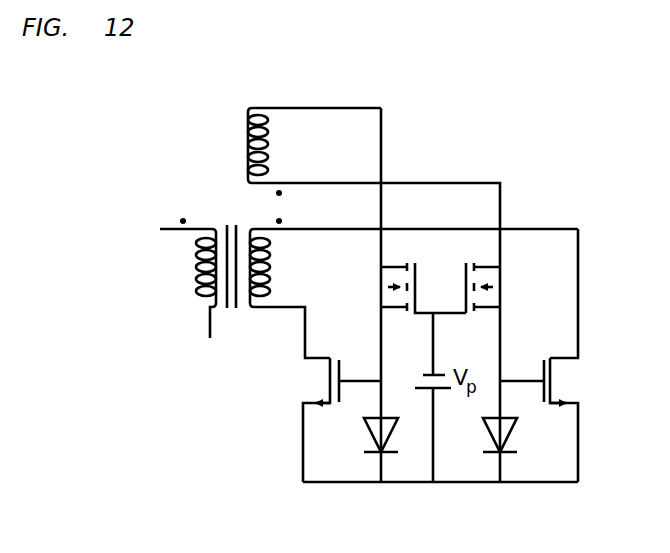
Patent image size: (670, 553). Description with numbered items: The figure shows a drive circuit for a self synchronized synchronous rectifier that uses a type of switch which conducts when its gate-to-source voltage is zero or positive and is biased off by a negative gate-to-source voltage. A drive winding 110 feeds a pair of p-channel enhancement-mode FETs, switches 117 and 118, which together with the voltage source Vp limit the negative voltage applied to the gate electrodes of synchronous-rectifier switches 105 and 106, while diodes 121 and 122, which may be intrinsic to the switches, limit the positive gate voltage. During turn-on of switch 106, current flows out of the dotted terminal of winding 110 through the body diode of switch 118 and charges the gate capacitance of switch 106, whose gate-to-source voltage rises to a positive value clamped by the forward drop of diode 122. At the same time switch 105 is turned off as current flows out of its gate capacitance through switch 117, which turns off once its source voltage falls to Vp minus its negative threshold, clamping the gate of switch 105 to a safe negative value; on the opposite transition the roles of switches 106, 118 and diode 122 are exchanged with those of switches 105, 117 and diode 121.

The winding 110 is at (268, 146).
The switch 118 is at (381, 302).
The switch 117 is at (500, 290).
The synchronous-rectifier switch 106 is at (322, 358).
The synchronous-rectifier switch 105 is at (563, 358).
The diode 122 is at (378, 445).
The diode 121 is at (496, 445).